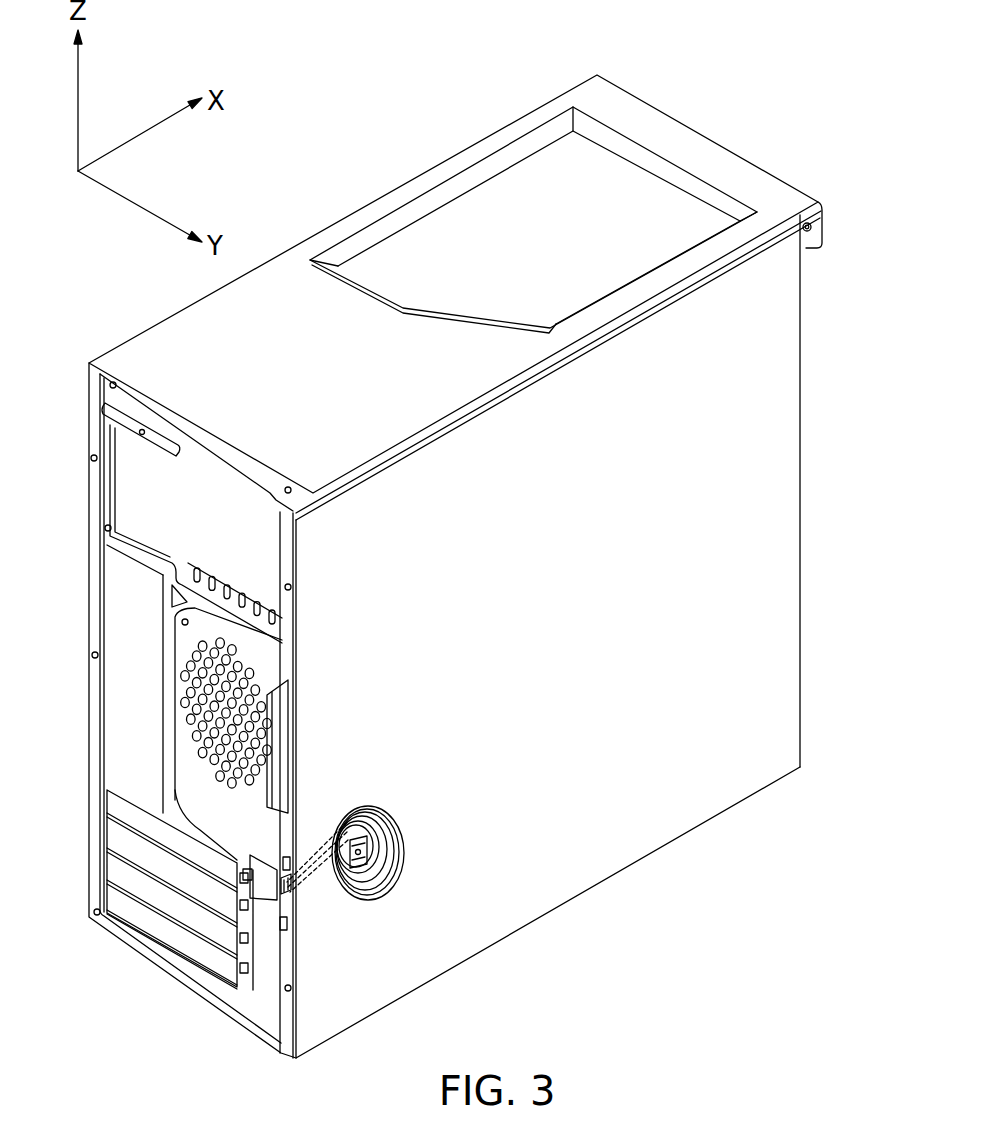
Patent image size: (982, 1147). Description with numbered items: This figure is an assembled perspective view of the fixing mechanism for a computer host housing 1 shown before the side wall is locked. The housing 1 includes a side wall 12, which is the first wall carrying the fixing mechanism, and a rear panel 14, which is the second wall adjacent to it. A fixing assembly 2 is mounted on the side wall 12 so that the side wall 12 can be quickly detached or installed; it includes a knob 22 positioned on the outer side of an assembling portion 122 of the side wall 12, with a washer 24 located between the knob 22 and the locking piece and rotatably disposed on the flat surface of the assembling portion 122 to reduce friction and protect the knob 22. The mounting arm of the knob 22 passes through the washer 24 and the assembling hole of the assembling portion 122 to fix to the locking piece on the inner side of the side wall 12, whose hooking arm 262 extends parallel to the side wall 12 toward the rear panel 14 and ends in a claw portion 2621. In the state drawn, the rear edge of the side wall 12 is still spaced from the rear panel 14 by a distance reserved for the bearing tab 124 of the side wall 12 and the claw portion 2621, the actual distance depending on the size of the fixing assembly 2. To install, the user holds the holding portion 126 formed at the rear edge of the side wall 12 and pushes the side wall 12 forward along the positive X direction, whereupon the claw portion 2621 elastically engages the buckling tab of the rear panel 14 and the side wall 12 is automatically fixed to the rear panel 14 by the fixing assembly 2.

The housing 1 is at (717, 119).
The side wall 12 is at (630, 822).
The rear panel 14 is at (224, 490).
The knob 22 is at (372, 850).
The washer 24 is at (377, 818).
The assembling portion 122 is at (404, 798).
The bearing tab 124 is at (270, 897).
The holding portion 126 is at (287, 718).
The fixing assembly 2 is at (380, 878).
The hooking arm 262 is at (318, 878).
The claw portion 2621 is at (247, 872).